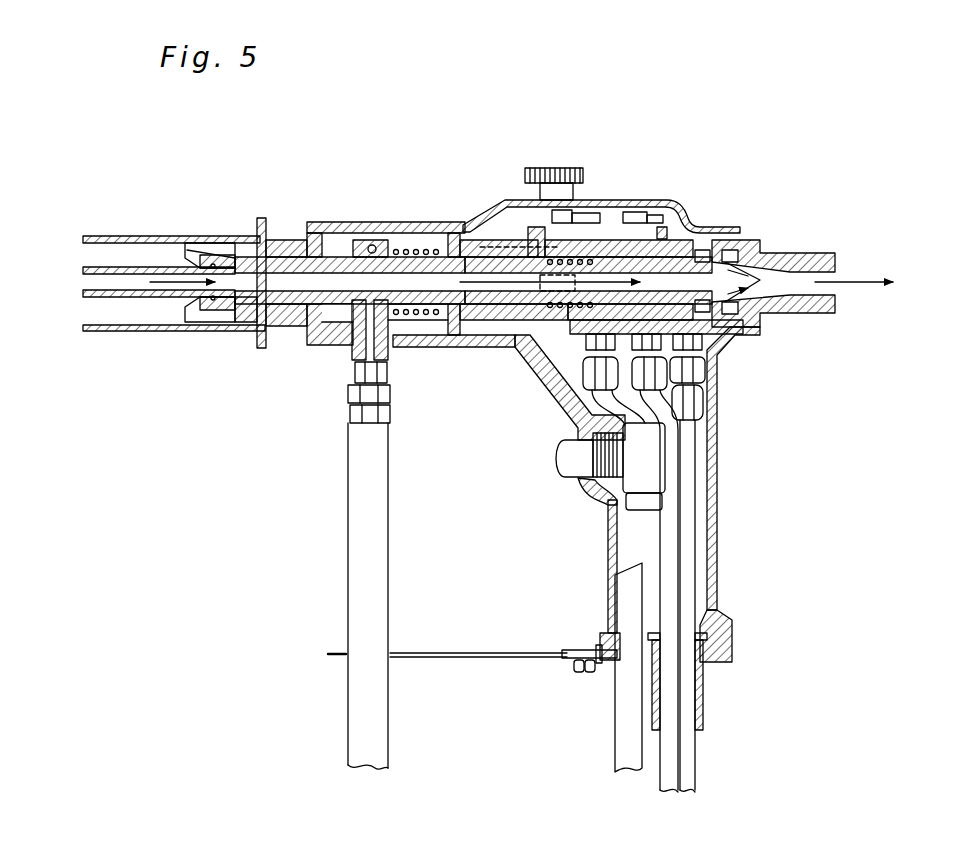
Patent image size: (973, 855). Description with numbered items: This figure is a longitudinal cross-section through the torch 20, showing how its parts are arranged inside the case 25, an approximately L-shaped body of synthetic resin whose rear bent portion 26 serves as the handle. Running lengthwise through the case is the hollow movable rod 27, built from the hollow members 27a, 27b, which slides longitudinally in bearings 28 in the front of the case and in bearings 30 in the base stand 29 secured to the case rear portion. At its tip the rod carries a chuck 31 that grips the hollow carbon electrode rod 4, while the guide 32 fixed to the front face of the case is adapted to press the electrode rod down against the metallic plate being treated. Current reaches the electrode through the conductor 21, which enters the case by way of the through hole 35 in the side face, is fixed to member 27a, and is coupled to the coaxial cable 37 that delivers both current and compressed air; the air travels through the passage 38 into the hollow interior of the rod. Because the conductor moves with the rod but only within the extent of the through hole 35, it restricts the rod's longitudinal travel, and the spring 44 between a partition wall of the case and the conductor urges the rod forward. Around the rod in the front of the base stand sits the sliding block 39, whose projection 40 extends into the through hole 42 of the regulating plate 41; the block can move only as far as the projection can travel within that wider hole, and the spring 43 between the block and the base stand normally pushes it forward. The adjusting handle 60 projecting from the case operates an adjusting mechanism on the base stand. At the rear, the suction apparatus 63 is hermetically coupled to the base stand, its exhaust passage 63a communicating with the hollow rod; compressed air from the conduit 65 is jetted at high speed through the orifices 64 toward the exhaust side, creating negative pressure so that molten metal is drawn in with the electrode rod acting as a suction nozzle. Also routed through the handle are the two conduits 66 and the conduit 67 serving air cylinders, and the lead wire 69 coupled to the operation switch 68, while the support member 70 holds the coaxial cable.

The hollow carbon electrode rod 4 is at (70, 230).
The torch 20 is at (385, 218).
The conductor 21 is at (355, 228).
The case 25 is at (312, 228).
The rear bent portion (handle portion) 26 is at (712, 508).
The hollow movable rod 27 is at (248, 312).
The hollow member 27a is at (232, 232).
The hollow member 27b is at (478, 342).
The bearings 28 is at (287, 318).
The base stand 29 is at (690, 240).
The bearings 30 is at (566, 362).
The chuck 31 is at (215, 318).
The guide 32 is at (150, 230).
The through hole 35 is at (340, 342).
The coaxial cable 37 is at (348, 520).
The passage 38 is at (352, 375).
The sliding block 39 is at (462, 228).
The projection 40 is at (540, 228).
The regulating plate 41 is at (640, 232).
The through hole 42 is at (492, 236).
The spring 43 is at (607, 232).
The spring 44 is at (418, 228).
The adjusting handle 60 is at (552, 168).
The suction apparatus 63 is at (790, 258).
The exhaust passage 63a is at (782, 285).
The orifices 64 is at (745, 300).
The conduit 65 is at (687, 441).
The conduits 66 is at (650, 402).
The conduit 67 is at (565, 438).
The operation switch 68 is at (575, 463).
The lead wire 69 is at (622, 718).
The support member 70 is at (467, 658).